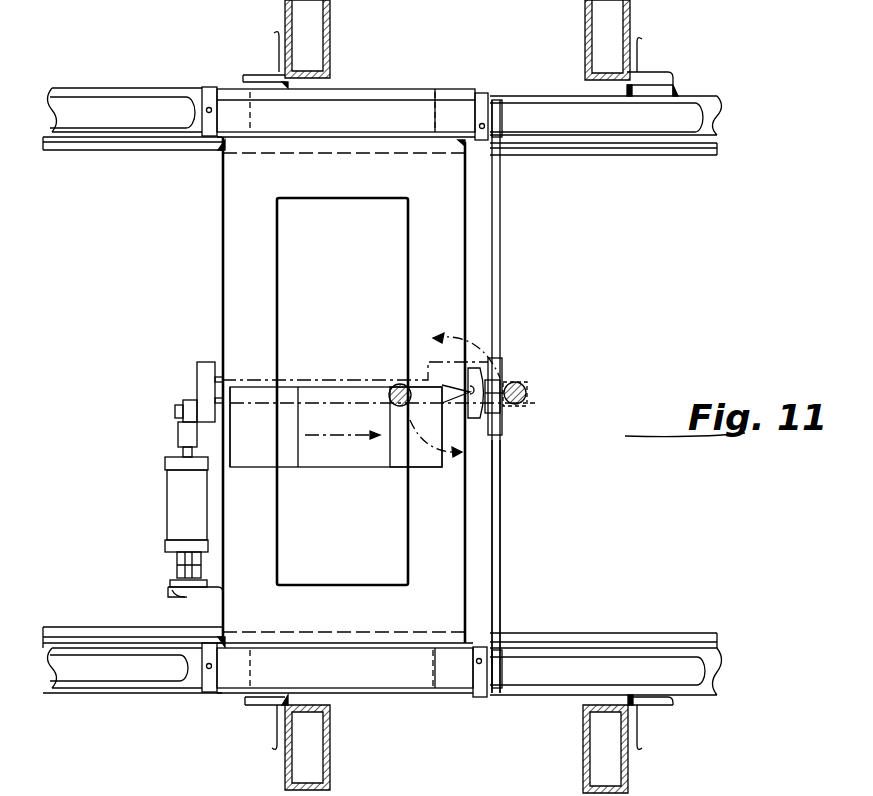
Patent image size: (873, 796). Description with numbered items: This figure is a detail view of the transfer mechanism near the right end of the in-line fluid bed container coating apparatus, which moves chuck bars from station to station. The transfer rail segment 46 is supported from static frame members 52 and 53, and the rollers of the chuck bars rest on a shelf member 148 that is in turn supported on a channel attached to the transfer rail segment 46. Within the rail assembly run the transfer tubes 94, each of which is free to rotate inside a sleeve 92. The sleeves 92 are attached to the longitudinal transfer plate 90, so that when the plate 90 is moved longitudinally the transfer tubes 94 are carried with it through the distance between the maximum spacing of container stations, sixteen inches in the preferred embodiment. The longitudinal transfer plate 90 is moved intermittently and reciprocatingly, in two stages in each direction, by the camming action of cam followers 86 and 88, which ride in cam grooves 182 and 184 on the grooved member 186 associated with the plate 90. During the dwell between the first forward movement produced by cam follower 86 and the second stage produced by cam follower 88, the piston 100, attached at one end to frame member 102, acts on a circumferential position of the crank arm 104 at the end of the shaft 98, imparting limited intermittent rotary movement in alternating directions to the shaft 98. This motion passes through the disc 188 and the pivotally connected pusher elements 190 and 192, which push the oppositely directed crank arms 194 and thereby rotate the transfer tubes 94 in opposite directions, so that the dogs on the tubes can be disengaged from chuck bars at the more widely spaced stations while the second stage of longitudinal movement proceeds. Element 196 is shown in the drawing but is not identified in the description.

The transfer rail segment 46 is at (710, 118).
The static frame member 52 is at (330, 52).
The static frame member 53 is at (632, 18).
The cam follower 86 is at (398, 383).
The cam follower 88 is at (527, 397).
The longitudinal transfer plate 90 is at (242, 225).
The sleeve 92 is at (235, 90).
The transfer tube 94 is at (657, 125).
The shaft 98 is at (298, 380).
The piston 100 is at (178, 503).
The frame member 102 is at (182, 595).
The crank arm 104 is at (207, 380).
The shelf member 148 is at (597, 152).
The cam groove 182 is at (397, 463).
The cam groove 184 is at (288, 463).
The grooved member 186 is at (250, 453).
The disc 188 is at (480, 410).
The pusher element 190 is at (500, 525).
The pusher element 192 is at (498, 285).
The crank arm 194 is at (480, 685).
The upper bearing bracket 196 is at (487, 95).